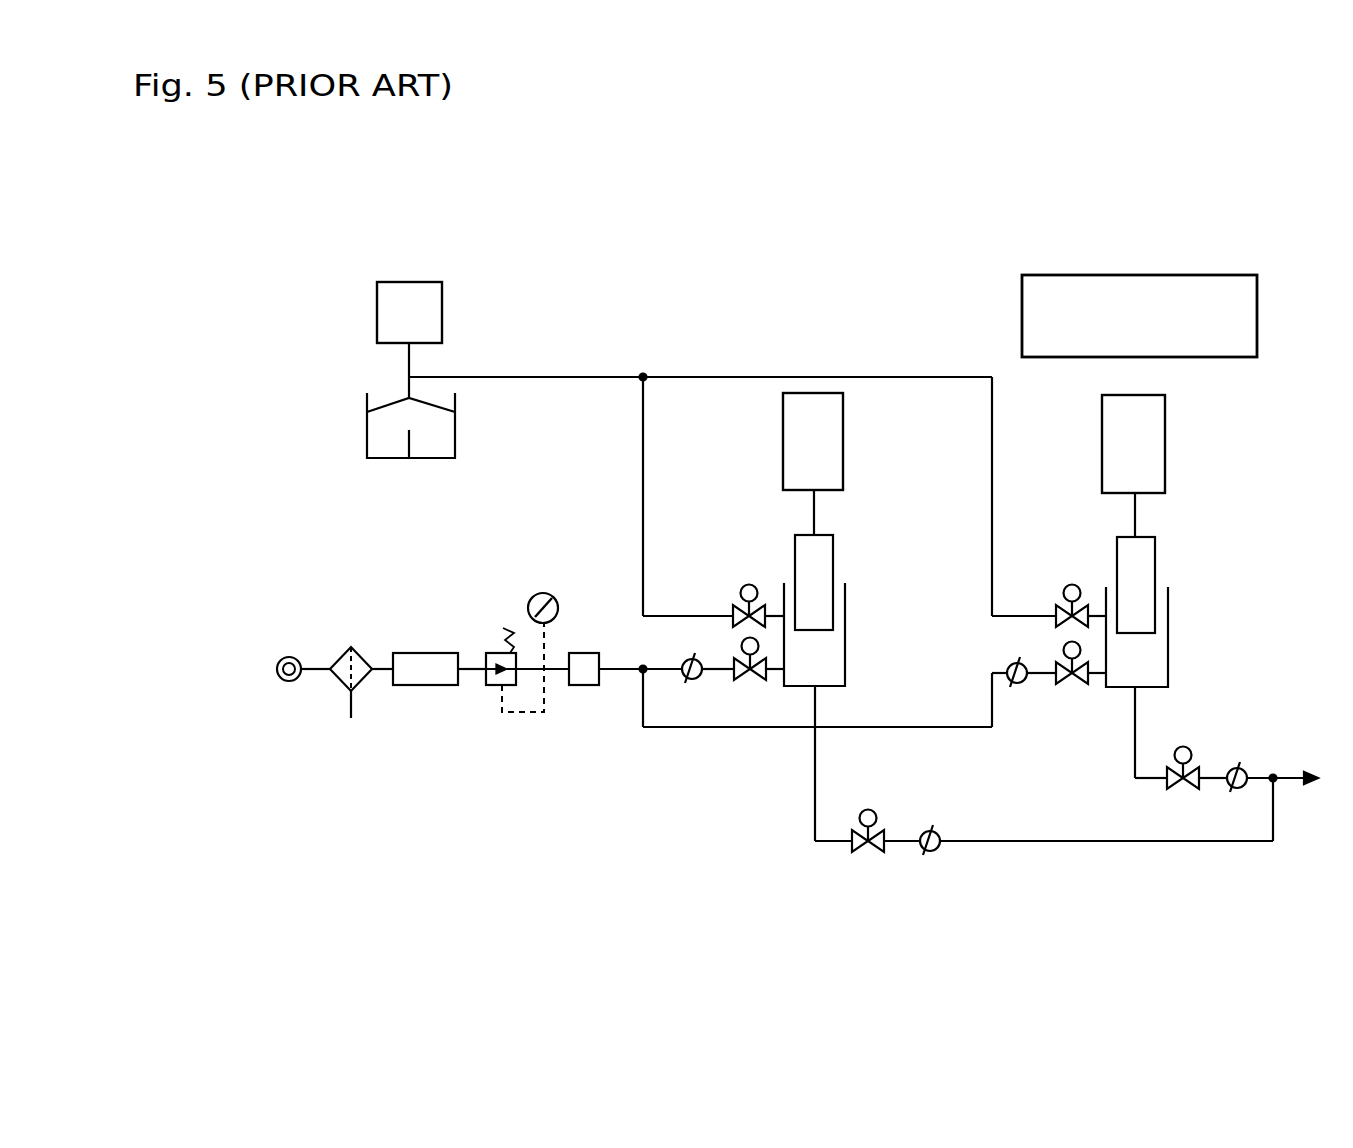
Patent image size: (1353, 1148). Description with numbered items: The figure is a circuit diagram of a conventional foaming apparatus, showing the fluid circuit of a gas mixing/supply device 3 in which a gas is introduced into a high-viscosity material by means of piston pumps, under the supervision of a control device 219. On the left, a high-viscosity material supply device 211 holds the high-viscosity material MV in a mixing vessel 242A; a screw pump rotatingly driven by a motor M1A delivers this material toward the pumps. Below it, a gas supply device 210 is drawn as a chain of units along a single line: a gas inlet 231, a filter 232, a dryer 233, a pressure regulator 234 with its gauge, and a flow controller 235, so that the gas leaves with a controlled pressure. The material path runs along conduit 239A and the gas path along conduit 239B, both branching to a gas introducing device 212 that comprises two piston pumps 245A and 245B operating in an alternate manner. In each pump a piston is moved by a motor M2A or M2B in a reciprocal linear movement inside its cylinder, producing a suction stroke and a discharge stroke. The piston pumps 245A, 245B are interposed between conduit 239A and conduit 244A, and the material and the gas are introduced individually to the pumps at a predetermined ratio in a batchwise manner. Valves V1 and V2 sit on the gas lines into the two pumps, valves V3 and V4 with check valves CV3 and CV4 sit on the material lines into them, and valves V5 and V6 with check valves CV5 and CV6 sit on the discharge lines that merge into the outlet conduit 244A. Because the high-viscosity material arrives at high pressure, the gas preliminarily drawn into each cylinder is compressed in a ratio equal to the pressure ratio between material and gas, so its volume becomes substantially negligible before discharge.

The mixing/supply device 3 is at (925, 223).
The control device 219 is at (1022, 312).
The high-viscosity material supply device 211 is at (493, 269).
The motor M1A is at (442, 315).
The mixing vessel 242A is at (458, 435).
The high-viscosity material MV is at (405, 437).
The gas supply device 210 is at (497, 563).
The gas inlet 231 is at (290, 657).
The filter 232 is at (350, 648).
The dryer 233 is at (425, 657).
The pressure regulator 234 is at (492, 657).
The flow controller 235 is at (583, 657).
The conduit 239A is at (633, 350).
The conduit 239B is at (627, 672).
The gas introducing device 212 is at (1062, 436).
The motor M2A is at (790, 443).
The motor M2B is at (1155, 463).
The piston pump 245A is at (850, 616).
The piston pump 245B is at (1168, 617).
The conduit 244A is at (1285, 773).
The valve V1 is at (750, 580).
The valve V2 is at (1073, 585).
The valve V3 is at (743, 678).
The valve V4 is at (1063, 682).
The valve V5 is at (870, 853).
The valve V6 is at (1177, 788).
The check valve CV3 is at (693, 682).
The check valve CV4 is at (1013, 683).
The check valve CV5 is at (935, 850).
The check valve CV6 is at (1227, 793).